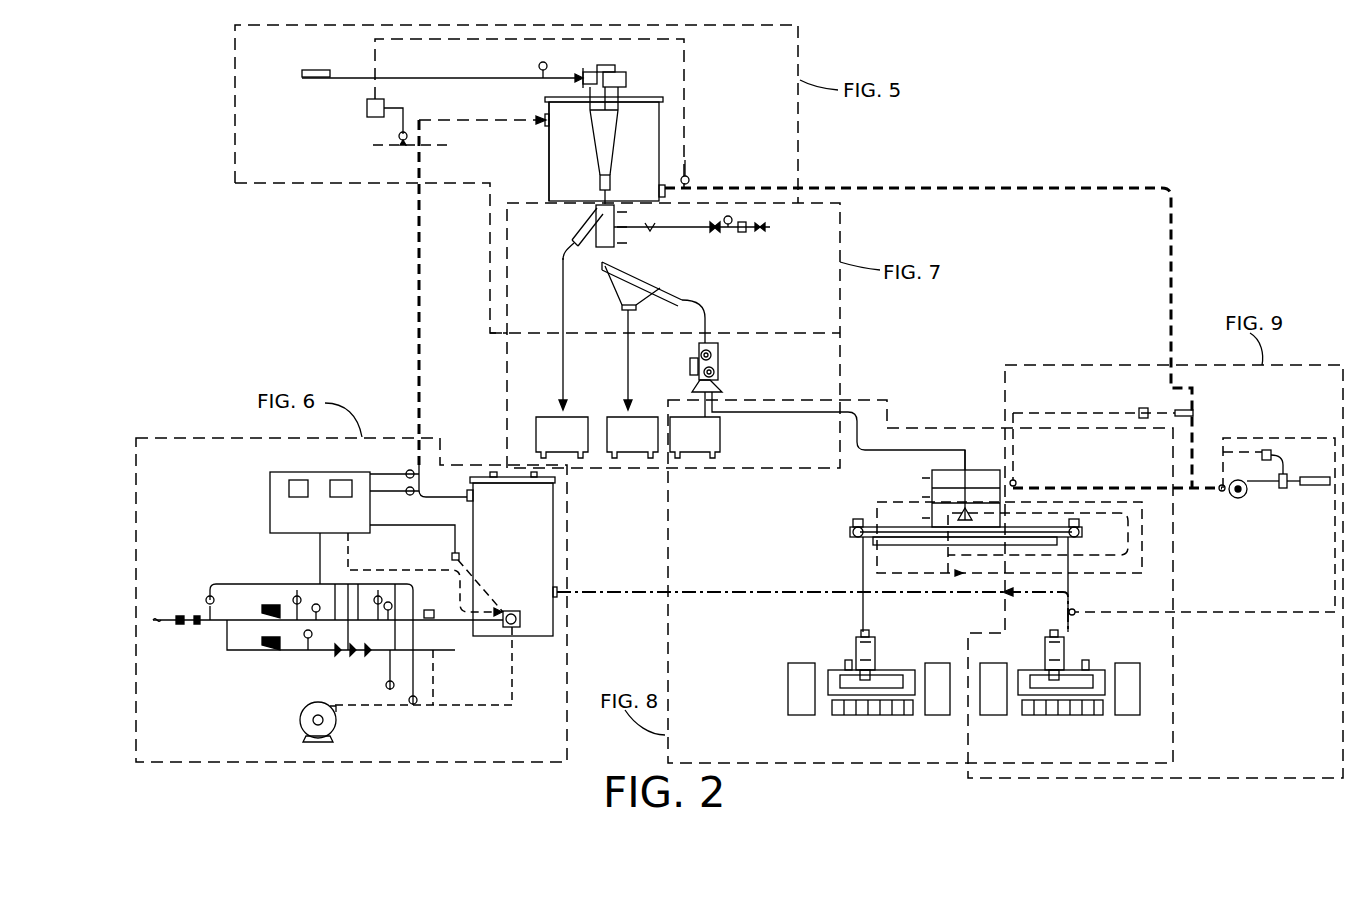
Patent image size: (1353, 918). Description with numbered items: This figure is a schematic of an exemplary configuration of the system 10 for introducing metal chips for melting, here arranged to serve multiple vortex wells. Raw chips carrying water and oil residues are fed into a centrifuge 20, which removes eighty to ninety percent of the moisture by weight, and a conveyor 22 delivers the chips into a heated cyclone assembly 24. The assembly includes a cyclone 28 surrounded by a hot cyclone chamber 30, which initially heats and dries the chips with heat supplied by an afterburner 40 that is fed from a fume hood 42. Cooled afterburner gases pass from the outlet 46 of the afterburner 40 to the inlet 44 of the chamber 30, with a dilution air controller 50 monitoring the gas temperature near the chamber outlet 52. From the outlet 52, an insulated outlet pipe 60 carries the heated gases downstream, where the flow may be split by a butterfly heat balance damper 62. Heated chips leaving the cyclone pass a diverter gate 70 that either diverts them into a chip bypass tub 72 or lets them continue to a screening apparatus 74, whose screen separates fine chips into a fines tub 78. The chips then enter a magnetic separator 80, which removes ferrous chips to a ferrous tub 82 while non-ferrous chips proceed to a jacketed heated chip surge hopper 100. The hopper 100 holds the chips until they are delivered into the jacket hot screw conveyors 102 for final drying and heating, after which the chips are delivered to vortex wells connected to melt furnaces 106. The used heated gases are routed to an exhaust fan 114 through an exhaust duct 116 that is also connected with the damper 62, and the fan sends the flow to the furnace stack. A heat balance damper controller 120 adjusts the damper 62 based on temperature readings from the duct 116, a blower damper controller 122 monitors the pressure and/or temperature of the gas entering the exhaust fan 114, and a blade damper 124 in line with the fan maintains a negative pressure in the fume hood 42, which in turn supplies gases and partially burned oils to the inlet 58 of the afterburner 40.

The system 10 is at (1066, 110).
The centrifuge 20 is at (316, 80).
The conveyor 22 is at (468, 78).
The heated cyclone assembly 24 is at (648, 118).
The cyclone 28 is at (597, 146).
The hot cyclone chamber 30 is at (560, 171).
The afterburner 40 is at (553, 531).
The fume hood 42 is at (875, 638).
The inlet 44 is at (540, 117).
The outlet 46 is at (467, 494).
The dilution air controller 50 is at (367, 108).
The outlet 52 is at (668, 190).
The inlet 58 is at (557, 598).
The outlet pipe 60 is at (1045, 188).
The butterfly heat balance damper 62 is at (1193, 413).
The diverter gate 70 is at (575, 238).
The chip bypass tub 72 is at (576, 416).
The screening apparatus 74 is at (612, 290).
The fines tub 78 is at (640, 416).
The magnetic separator 80 is at (712, 343).
The ferrous tub 82 is at (722, 438).
The jacketed heated chip surge hopper 100 is at (985, 470).
The jacket hot screw conveyor 102 is at (952, 540).
The melt furnace 106 is at (873, 717).
The exhaust fan 114 is at (1236, 499).
The exhaust duct 116 is at (1086, 490).
The heat balance damper controller 120 is at (1140, 409).
The blower damper controller 122 is at (1272, 450).
The blade damper 124 is at (1287, 489).